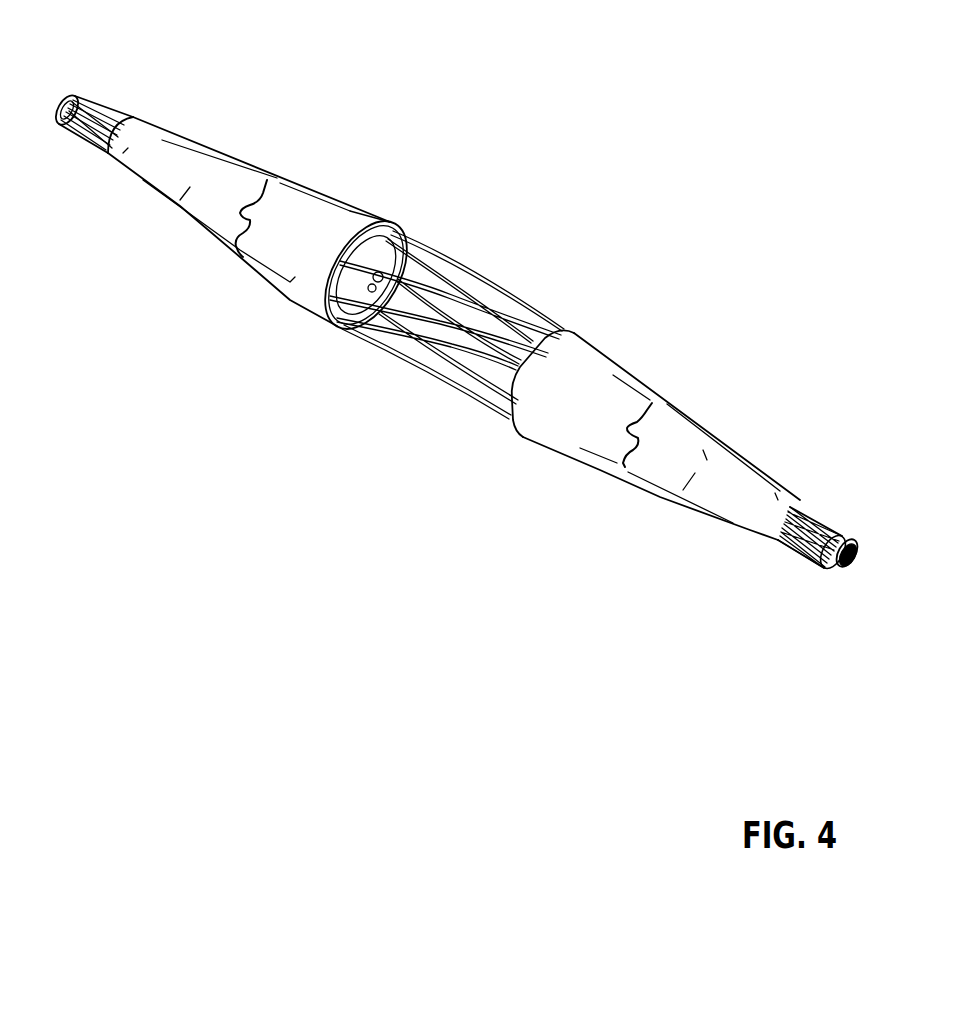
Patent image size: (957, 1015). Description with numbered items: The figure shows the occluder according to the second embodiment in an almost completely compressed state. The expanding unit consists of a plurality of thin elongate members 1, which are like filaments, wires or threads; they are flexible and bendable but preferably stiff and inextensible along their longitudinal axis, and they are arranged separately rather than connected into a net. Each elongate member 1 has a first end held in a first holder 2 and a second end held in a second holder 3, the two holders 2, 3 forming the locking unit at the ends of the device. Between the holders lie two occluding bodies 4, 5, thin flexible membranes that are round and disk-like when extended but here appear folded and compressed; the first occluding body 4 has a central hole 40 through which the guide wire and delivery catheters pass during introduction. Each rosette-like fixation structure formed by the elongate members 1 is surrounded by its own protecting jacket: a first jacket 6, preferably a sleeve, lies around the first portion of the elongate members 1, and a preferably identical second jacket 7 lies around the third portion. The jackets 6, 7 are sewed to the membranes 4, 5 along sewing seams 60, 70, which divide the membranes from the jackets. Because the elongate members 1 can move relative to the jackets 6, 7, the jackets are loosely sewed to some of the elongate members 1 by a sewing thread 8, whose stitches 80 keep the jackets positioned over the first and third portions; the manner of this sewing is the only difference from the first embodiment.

The elongate members 1 is at (95, 105).
The first holder 2 is at (66, 95).
The second holder 3 is at (847, 532).
The first occluding body 4 is at (354, 215).
The second occluding body 5 is at (591, 370).
The first jacket 6 is at (231, 178).
The second jacket 7 is at (748, 470).
The sewing thread 8 is at (152, 100).
The central hole 40 is at (380, 337).
The sewing seam 60 is at (283, 181).
The sewing seam 70 is at (650, 392).
The stitches 80 is at (706, 442).